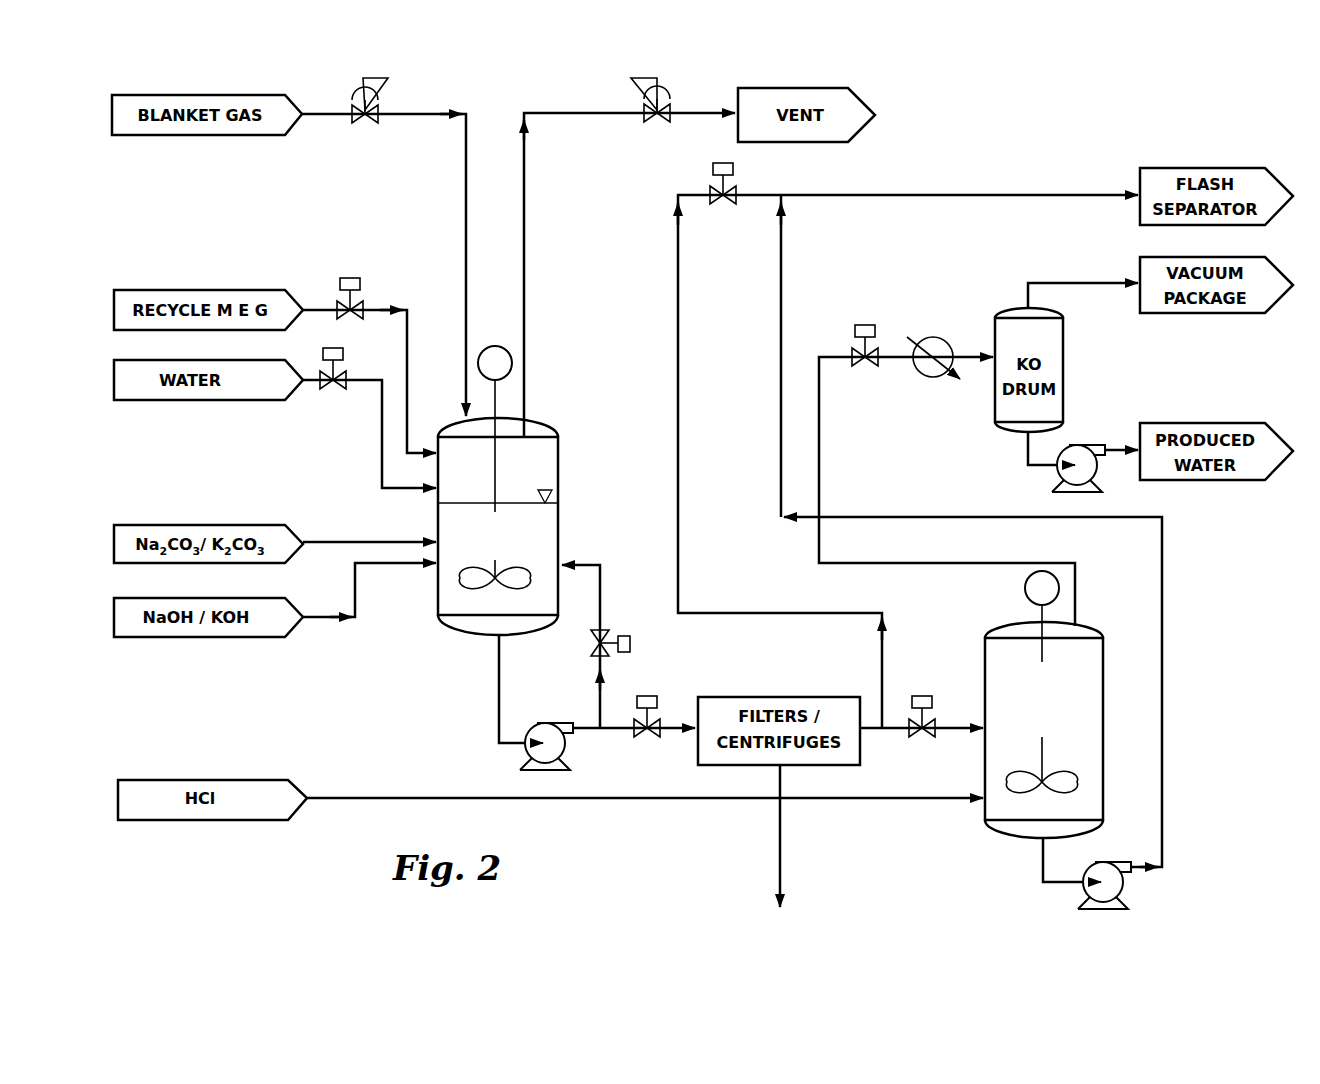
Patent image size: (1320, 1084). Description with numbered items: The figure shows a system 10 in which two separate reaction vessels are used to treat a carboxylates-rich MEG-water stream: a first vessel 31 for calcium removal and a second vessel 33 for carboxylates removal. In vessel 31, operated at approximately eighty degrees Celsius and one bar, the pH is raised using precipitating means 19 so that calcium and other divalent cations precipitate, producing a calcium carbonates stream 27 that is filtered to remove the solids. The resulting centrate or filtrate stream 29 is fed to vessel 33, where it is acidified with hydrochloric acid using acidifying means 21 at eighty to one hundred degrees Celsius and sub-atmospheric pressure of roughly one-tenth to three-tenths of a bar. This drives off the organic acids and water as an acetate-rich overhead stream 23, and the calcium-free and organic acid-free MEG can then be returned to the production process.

The system 10 is at (1180, 672).
The precipitating means 19 is at (357, 538).
The acidifying means 21 is at (386, 797).
The acetate-rich overhead stream 23 is at (962, 563).
The calcium carbonates bottoms stream 27 is at (493, 686).
The filtered calcium carbonates bottoms stream 29 is at (958, 732).
The reaction vessel for calcium removal 31 is at (563, 468).
The reaction vessel for carboxylates removal 33 is at (983, 667).